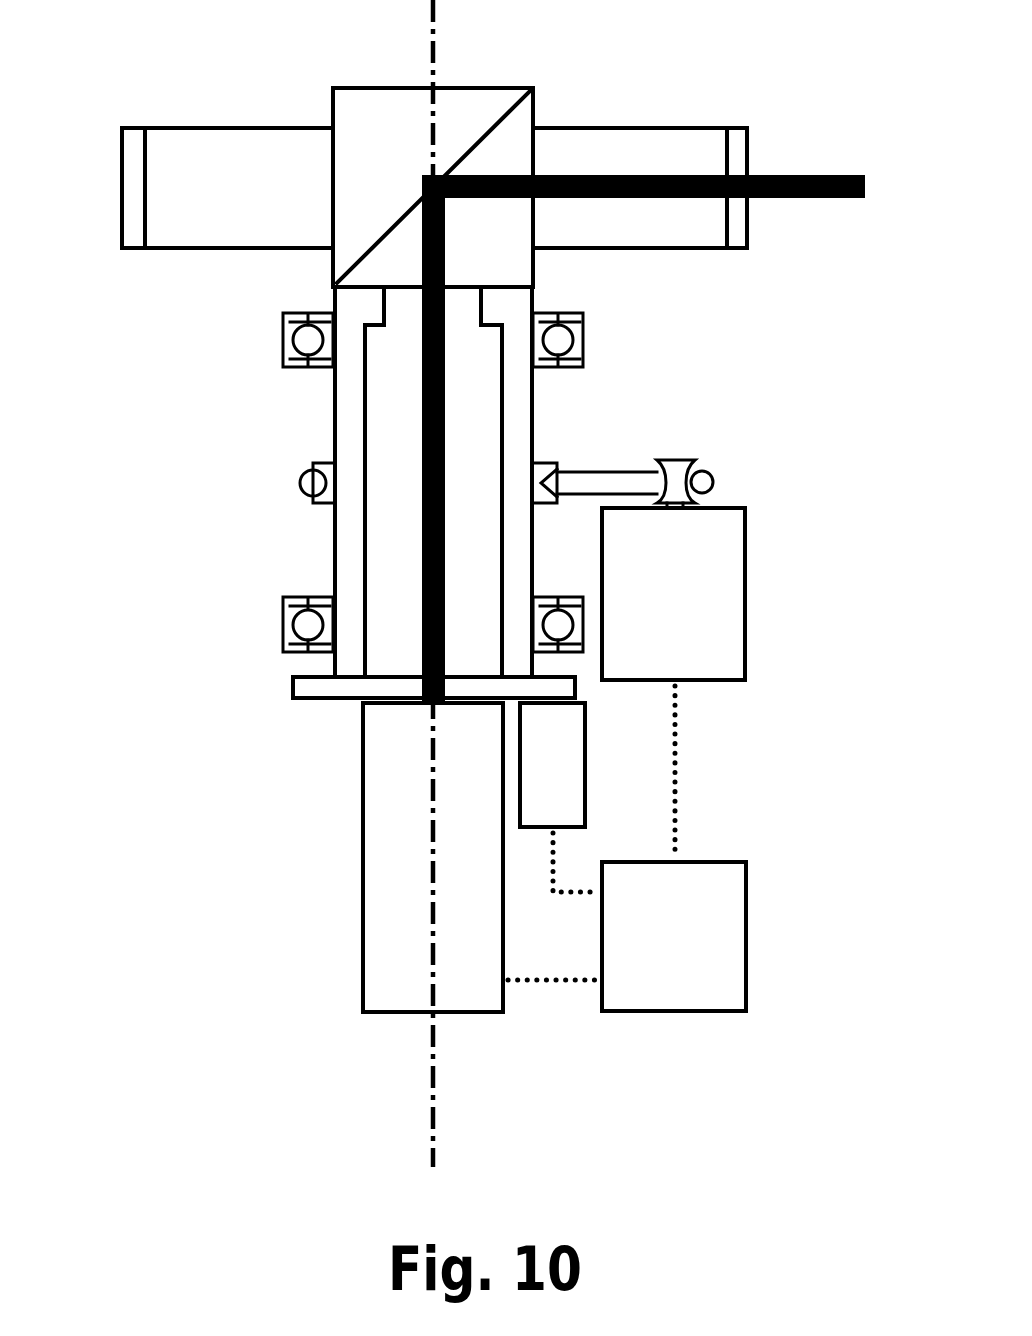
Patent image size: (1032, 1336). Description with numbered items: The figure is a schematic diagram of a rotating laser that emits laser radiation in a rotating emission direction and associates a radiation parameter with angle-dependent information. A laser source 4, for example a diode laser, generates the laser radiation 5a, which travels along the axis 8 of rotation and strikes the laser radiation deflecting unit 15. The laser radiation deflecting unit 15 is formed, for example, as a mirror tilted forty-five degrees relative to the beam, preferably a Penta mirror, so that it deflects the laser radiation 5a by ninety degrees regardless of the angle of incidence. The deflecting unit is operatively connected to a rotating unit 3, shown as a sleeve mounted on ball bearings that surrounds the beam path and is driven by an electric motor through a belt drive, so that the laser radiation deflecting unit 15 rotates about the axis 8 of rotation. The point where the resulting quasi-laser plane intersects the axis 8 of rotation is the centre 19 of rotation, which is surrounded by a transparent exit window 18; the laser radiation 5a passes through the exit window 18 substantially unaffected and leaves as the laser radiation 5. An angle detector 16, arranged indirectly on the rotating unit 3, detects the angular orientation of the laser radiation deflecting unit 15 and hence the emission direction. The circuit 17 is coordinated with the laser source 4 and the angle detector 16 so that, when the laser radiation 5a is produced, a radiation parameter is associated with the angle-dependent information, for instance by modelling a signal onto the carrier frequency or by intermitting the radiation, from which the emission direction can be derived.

The rotating unit 3 is at (718, 612).
The laser source 4 is at (385, 875).
The laser radiation 5 is at (802, 173).
The laser radiation 5a is at (605, 175).
The axis of rotation 8 is at (430, 1090).
The laser radiation deflecting unit 15 is at (473, 118).
The angle detector 16 is at (560, 683).
The circuit 17 is at (717, 937).
The exit window 18 is at (137, 152).
The centre of rotation 19 is at (427, 165).